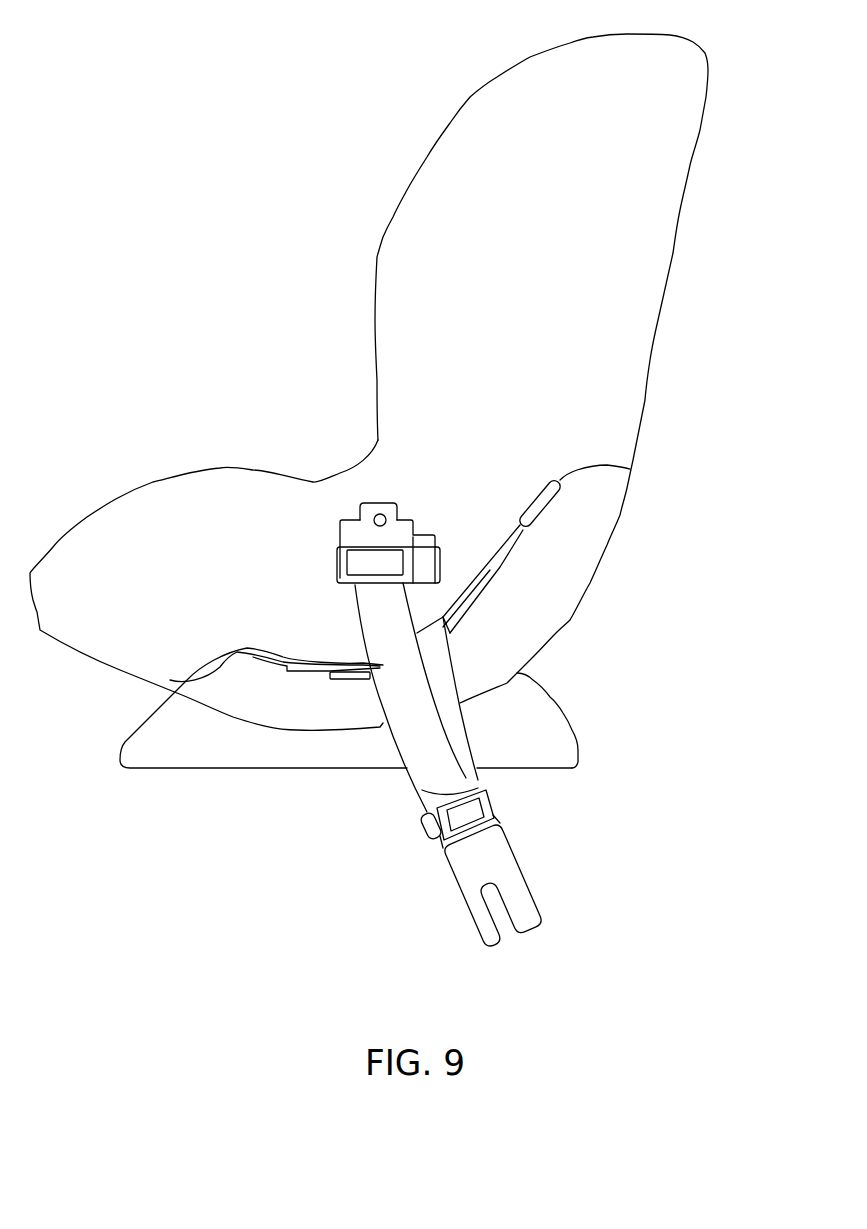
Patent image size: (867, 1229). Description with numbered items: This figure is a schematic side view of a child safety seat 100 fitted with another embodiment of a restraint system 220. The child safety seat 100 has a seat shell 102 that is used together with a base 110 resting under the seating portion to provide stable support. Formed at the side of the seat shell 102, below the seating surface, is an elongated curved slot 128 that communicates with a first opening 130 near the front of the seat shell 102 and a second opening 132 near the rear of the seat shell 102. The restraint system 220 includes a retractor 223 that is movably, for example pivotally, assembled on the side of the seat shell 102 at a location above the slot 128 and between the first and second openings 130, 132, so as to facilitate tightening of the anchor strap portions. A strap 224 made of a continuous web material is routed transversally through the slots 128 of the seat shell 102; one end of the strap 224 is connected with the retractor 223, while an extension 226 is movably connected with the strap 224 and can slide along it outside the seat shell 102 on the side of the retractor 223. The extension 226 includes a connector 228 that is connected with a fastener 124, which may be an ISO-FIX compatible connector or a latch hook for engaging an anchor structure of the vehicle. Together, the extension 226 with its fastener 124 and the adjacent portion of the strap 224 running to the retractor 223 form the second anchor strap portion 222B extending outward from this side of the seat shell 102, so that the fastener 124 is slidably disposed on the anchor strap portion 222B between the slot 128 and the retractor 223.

The child safety seat 100 is at (106, 31).
The seat shell 102 is at (541, 195).
The base 110 is at (330, 762).
The fastener 124 is at (510, 870).
The slot 128 is at (505, 555).
The first opening 130 is at (248, 663).
The second opening 132 is at (553, 516).
The restraint system 220 is at (369, 693).
The second anchor strap portion 222B is at (469, 720).
The retractor 223 is at (411, 503).
The strap 224 is at (407, 672).
The extension 226 is at (499, 813).
The connector 228 is at (424, 828).